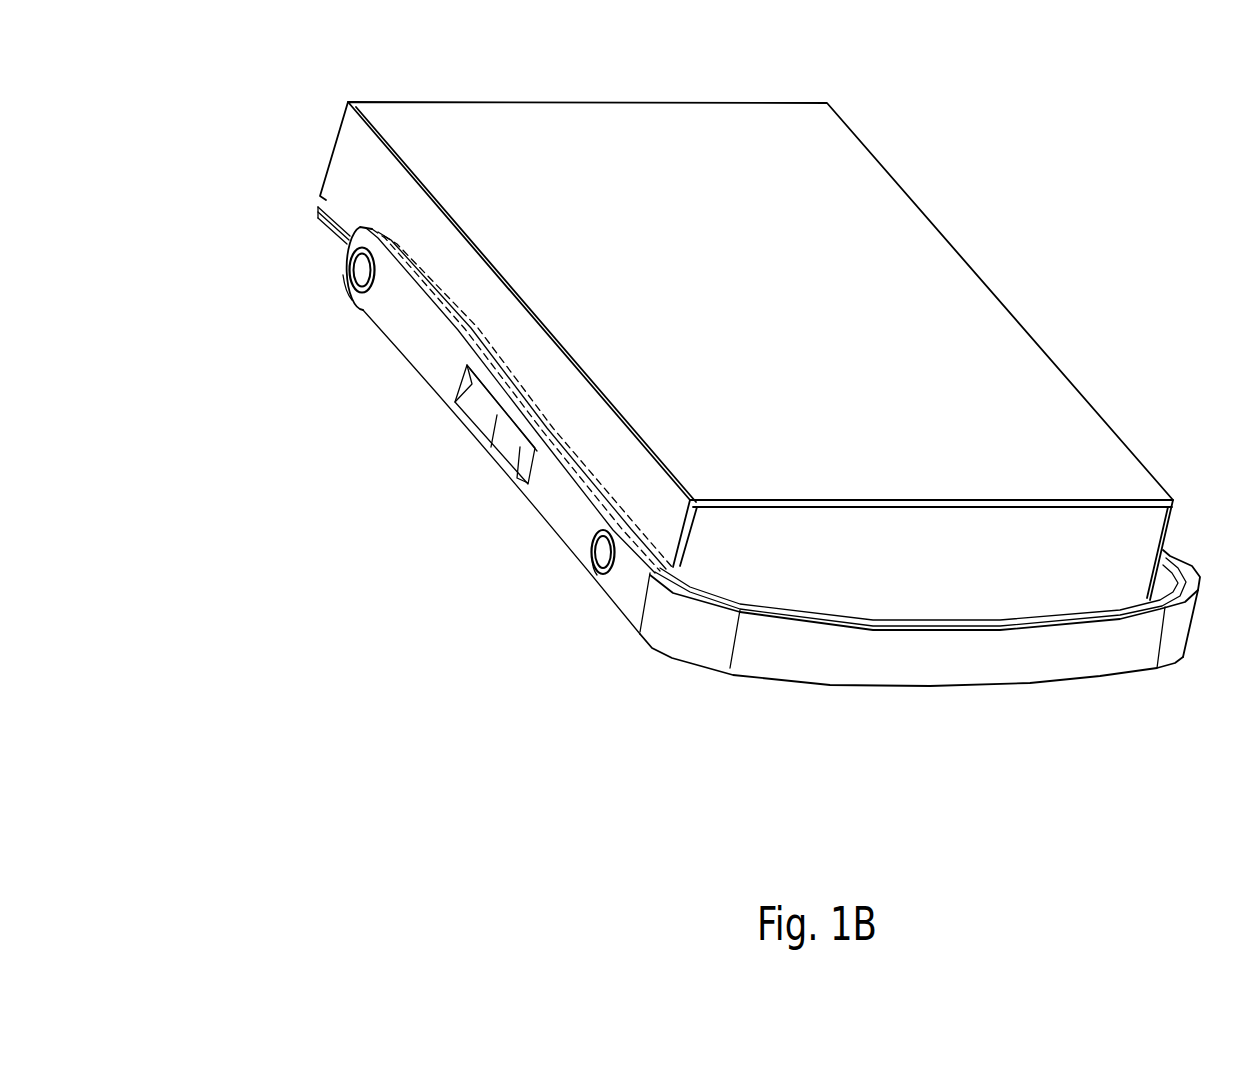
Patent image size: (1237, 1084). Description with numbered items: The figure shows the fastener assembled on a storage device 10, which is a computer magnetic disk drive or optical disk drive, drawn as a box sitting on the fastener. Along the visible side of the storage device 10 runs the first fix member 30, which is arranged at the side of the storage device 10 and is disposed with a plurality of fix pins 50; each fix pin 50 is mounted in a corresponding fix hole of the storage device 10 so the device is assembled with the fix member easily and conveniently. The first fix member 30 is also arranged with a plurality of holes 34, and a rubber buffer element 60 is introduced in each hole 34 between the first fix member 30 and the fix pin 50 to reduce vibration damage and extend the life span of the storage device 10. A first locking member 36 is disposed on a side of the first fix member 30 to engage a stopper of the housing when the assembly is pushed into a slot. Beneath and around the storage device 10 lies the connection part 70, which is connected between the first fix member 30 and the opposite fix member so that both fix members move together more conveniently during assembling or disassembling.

The storage device 10 is at (942, 315).
The first fix member 30 is at (357, 551).
The hole 34 is at (347, 286).
The first locking member 36 is at (498, 445).
The fix pin 50 is at (350, 262).
The buffer element 60 is at (364, 272).
The connection part 70 is at (1038, 737).